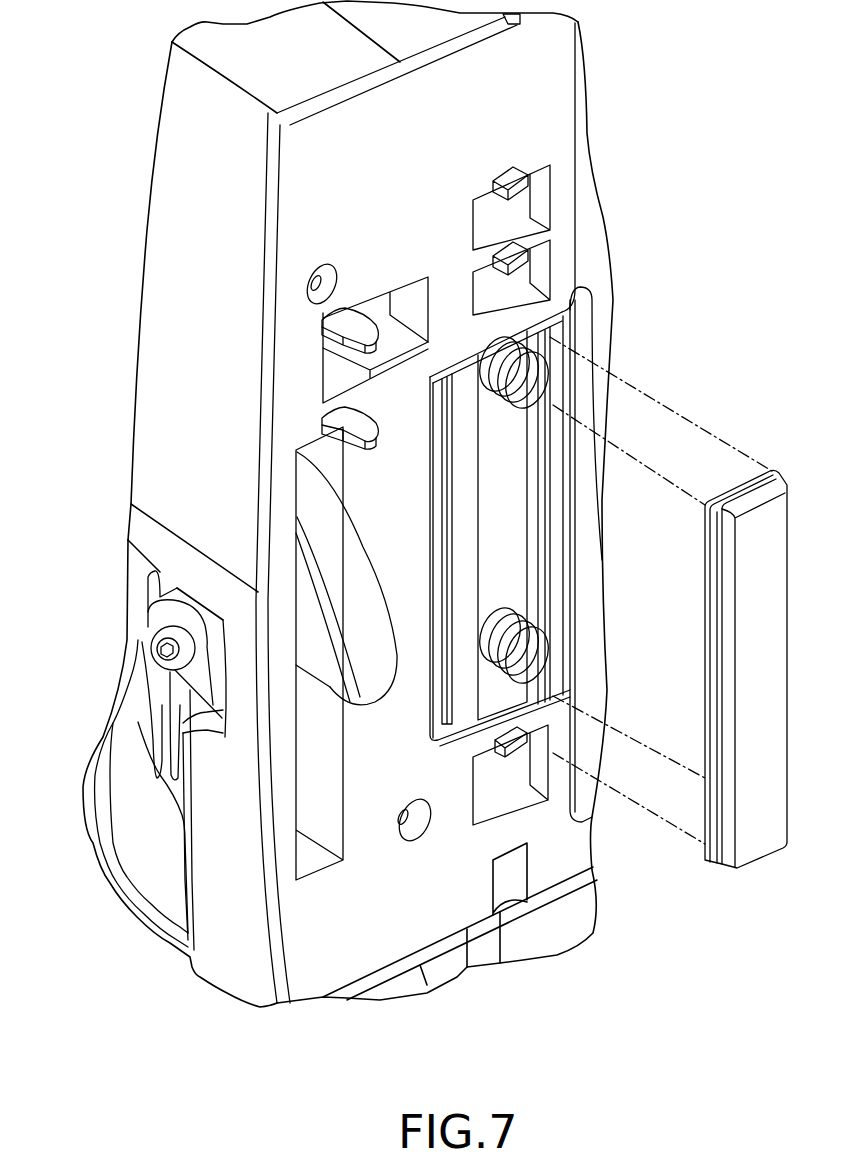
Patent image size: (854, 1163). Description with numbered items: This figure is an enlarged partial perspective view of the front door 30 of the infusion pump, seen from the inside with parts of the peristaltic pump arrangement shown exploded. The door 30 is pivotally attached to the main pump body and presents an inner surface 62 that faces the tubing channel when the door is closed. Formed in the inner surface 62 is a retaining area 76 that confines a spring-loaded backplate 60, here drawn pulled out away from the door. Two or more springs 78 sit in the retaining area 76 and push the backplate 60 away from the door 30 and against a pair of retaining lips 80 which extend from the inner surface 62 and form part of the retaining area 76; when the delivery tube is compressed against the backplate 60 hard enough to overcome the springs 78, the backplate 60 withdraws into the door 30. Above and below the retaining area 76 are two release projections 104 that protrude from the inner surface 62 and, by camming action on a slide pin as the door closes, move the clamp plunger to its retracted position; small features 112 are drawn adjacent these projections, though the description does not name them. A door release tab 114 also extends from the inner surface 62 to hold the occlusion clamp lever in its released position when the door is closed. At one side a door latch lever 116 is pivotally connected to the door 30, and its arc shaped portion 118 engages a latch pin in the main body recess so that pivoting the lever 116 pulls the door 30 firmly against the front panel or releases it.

The front door 30 is at (150, 186).
The inner surface 62 is at (395, 160).
The retaining area 76 is at (513, 531).
The springs 78 is at (553, 385).
The retaining lips 80 is at (465, 545).
The release projections 104 is at (323, 413).
The tab 112 is at (350, 330).
The door release tab 114 is at (410, 352).
The door latch lever 116 is at (80, 793).
The arc shaped portion 118 is at (368, 547).
The spring-loaded backplate 60 is at (774, 774).